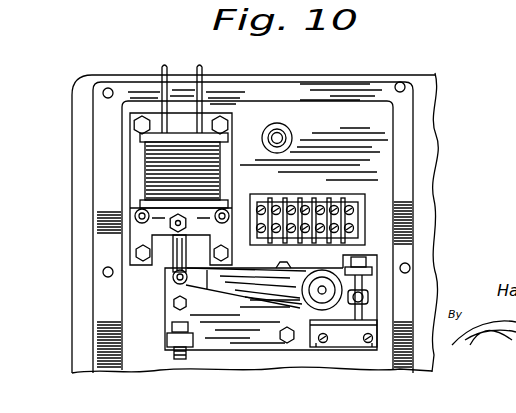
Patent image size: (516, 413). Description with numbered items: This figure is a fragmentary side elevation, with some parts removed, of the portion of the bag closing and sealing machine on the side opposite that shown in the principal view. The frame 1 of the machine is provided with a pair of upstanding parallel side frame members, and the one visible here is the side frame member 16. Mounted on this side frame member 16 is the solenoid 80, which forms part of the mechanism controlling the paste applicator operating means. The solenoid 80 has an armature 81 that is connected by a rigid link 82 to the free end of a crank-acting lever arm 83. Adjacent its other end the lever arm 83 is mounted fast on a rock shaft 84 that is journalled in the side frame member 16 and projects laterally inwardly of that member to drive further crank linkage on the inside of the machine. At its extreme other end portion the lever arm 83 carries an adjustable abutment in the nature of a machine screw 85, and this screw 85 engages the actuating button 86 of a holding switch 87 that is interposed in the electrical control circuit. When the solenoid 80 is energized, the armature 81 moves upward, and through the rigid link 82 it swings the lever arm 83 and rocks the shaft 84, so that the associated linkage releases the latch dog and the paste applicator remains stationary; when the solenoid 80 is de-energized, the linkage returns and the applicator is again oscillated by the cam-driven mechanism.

The frame 1 is at (445, 102).
The side frame member 16 is at (420, 150).
The solenoid 80 is at (228, 150).
The armature 81 is at (150, 226).
The rigid link 82 is at (171, 259).
The lever arm 83 is at (257, 293).
The rock shaft 84 is at (322, 290).
The machine screw 85 is at (366, 287).
The actuating button 86 is at (364, 308).
The holding switch 87 is at (350, 328).